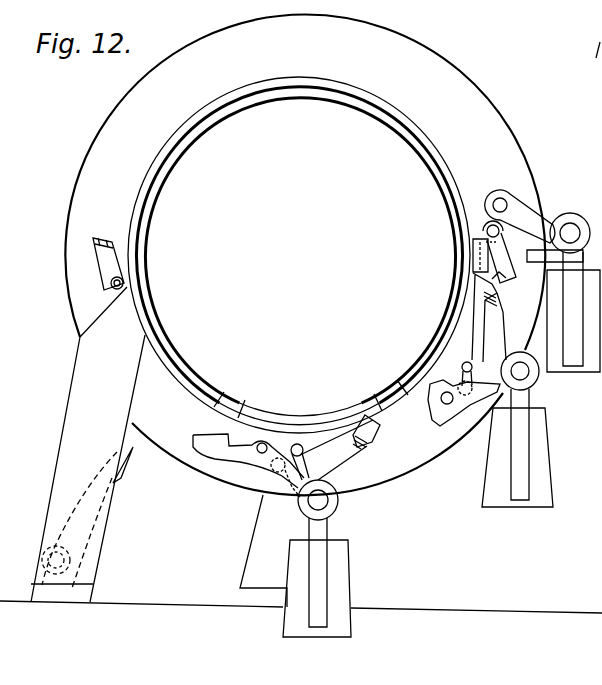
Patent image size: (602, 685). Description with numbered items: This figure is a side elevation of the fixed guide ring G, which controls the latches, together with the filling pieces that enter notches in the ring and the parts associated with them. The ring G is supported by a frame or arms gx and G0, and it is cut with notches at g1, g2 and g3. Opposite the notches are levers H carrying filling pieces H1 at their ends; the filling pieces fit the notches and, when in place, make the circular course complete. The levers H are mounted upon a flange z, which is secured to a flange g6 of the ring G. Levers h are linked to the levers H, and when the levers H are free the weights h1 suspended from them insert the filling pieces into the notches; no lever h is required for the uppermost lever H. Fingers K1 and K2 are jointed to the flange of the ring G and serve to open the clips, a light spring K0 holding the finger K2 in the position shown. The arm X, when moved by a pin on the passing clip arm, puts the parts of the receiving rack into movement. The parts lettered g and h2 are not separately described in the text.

The flange z is at (396, 37).
The ring g is at (220, 100).
The fixed guide ring G is at (299, 251).
The flange of the ring g6 is at (257, 102).
The finger K2 is at (108, 252).
The light spring K0 is at (110, 284).
The frame or arms gx is at (159, 447).
The arm X is at (122, 465).
The filling piece H1 is at (472, 246).
The lever H is at (558, 224).
The notch g2 is at (237, 408).
The notch g3 is at (398, 398).
The lever h is at (500, 326).
The frame or arms G0 is at (303, 553).
The weight h1 is at (441, 453).
The finger K1 is at (538, 216).
The arm h2 is at (522, 268).
The notch g1 is at (468, 263).